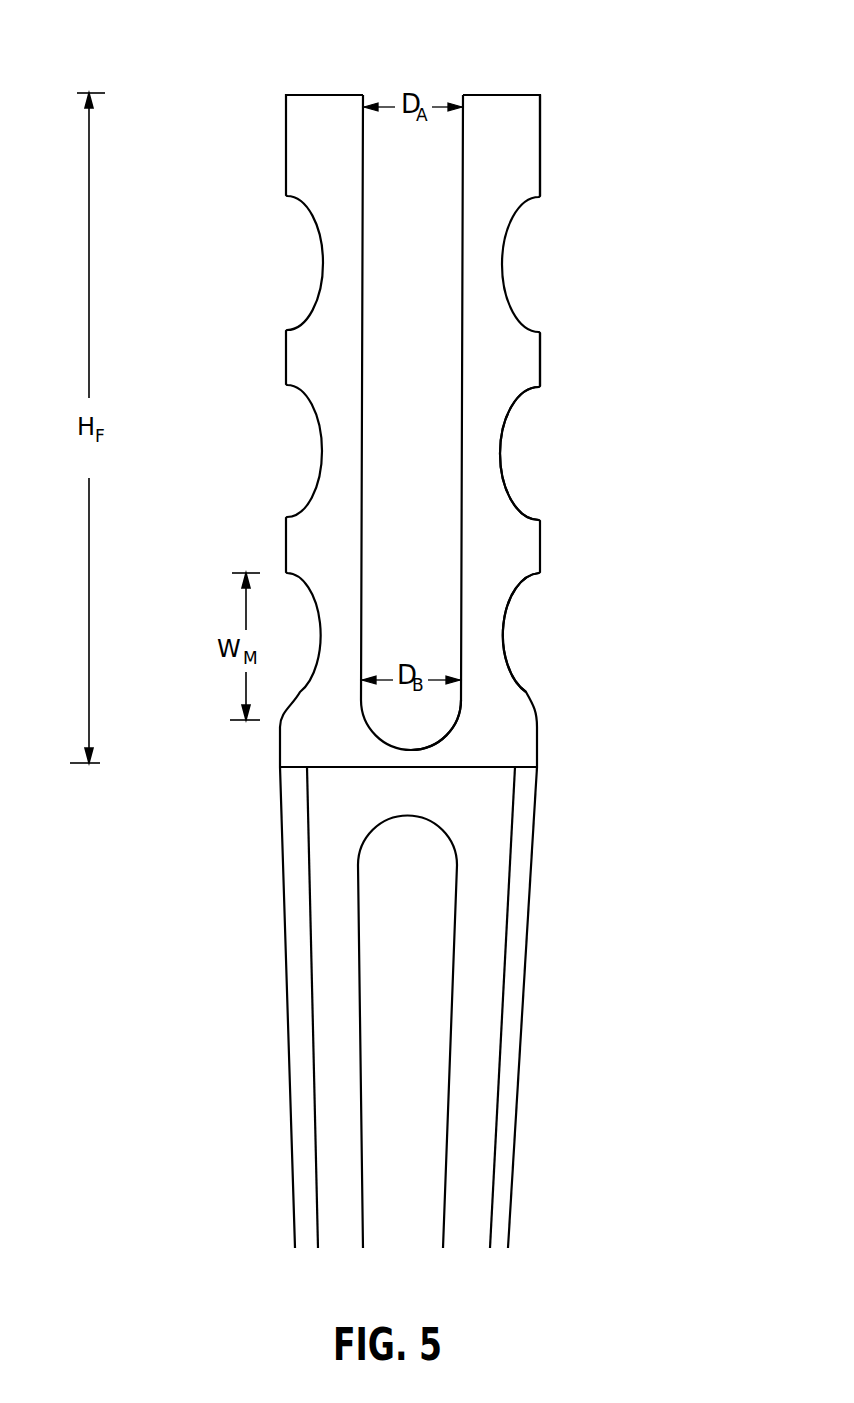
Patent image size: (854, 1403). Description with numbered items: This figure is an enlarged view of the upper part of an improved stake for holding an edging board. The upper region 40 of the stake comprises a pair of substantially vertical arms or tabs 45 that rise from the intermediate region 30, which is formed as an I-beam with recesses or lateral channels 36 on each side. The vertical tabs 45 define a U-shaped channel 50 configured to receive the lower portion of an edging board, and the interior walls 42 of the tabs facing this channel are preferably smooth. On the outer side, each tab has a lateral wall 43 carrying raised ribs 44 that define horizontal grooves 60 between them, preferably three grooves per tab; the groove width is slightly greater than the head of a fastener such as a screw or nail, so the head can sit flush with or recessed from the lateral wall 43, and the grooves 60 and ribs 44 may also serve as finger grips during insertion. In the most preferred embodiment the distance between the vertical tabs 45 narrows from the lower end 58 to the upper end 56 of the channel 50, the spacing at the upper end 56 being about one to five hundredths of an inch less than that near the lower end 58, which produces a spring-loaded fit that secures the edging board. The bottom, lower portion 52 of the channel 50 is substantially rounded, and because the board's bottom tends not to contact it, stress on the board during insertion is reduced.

The intermediate region 30 is at (520, 1050).
The lateral channel 36 is at (423, 948).
The upper region 40 is at (540, 545).
The interior wall 42 is at (462, 318).
The lateral wall 43 is at (540, 175).
The raised rib 44 is at (540, 354).
The vertical tab 45 is at (540, 132).
The U-shaped channel 50 is at (443, 497).
The lower portion of channel 52 is at (427, 707).
The upper end of channel 56 is at (466, 94).
The lower end of channel 58 is at (447, 740).
The horizontal groove 60 is at (500, 452).